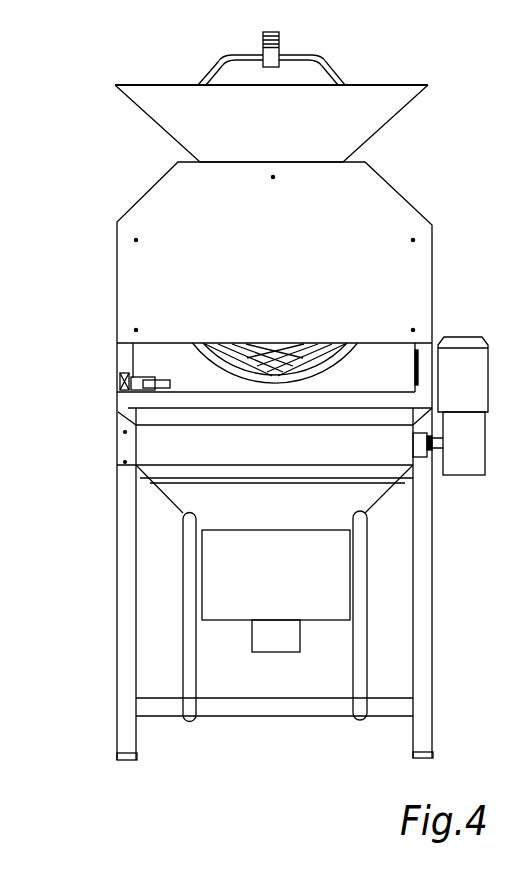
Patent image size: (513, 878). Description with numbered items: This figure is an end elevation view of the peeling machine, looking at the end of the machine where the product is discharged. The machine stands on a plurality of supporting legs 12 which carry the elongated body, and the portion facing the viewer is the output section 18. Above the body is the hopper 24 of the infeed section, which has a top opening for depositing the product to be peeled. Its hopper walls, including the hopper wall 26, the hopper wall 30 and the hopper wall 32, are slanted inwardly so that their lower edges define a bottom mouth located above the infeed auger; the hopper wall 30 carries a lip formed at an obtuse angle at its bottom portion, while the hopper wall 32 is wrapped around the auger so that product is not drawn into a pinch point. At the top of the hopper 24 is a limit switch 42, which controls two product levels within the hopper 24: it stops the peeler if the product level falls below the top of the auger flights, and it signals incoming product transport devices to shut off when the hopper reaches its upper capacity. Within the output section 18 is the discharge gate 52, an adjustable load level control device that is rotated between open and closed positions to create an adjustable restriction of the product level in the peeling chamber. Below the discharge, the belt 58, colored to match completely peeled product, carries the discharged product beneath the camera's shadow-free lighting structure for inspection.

The legs 12 is at (124, 742).
The output section 18 is at (116, 220).
The hopper 24 is at (238, 86).
The hopper wall 26 is at (171, 136).
The hopper wall 30 is at (373, 135).
The hopper wall 32 is at (289, 139).
The limit switch 42 is at (280, 34).
The discharge gate 52 is at (258, 351).
The belt 58 is at (272, 442).